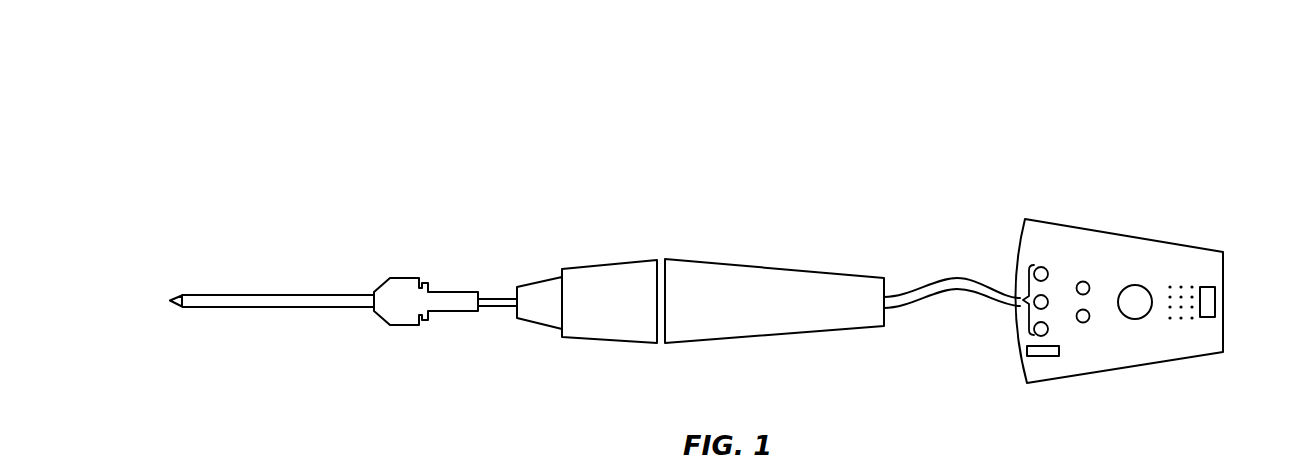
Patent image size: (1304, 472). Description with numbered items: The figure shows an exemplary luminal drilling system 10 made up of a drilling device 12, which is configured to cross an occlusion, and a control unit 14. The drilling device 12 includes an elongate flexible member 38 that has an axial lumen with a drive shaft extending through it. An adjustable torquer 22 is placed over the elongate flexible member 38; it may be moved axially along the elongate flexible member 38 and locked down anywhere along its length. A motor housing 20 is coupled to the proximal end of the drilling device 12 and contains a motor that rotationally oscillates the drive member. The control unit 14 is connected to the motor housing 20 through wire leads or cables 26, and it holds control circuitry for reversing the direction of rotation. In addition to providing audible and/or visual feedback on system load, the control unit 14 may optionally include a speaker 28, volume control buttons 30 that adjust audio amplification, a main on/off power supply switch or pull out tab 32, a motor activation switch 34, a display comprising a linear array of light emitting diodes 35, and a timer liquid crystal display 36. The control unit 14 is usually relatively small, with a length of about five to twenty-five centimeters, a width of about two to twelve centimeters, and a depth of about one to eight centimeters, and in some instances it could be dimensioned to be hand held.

The luminal drilling system 10 is at (566, 110).
The drilling device 12 is at (464, 384).
The control unit 14 is at (1127, 181).
The motor housing 20 is at (703, 343).
The adjustable torquer 22 is at (405, 278).
The wire leads or cables 26 is at (940, 278).
The speaker 28 is at (1180, 293).
The volume control buttons 30 is at (1088, 304).
The main on/off power supply switch or pull out tab 32 is at (1037, 352).
The motor activation switch 34 is at (1138, 313).
The linear array of light emitting diodes (LED) display 35 is at (1012, 292).
The timer liquid crystal display (LCD) 36 is at (1208, 294).
The elongate flexible member 38 is at (270, 308).